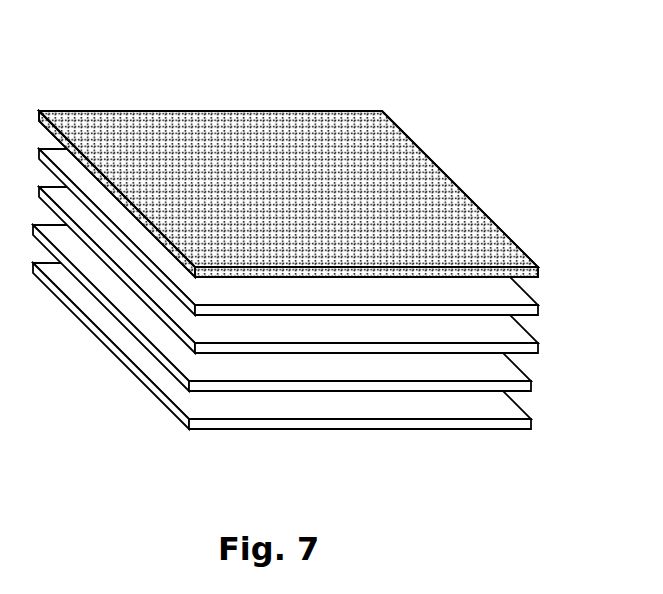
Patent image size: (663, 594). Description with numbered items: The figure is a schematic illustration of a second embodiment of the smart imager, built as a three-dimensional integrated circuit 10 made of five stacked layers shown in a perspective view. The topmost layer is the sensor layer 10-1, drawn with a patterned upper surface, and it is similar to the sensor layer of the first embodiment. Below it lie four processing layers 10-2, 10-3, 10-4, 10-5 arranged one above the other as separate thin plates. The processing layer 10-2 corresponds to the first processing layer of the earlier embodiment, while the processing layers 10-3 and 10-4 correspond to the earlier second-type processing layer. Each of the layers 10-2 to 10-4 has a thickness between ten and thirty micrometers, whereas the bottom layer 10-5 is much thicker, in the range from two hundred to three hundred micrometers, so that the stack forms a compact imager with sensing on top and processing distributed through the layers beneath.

The three-dimensional integrated circuit 10 is at (458, 82).
The sensor layer 10-1 is at (490, 217).
The processing layer 10-2 is at (530, 302).
The processing layer 10-3 is at (538, 342).
The processing layer 10-4 is at (530, 383).
The processing layer 10-5 is at (532, 420).